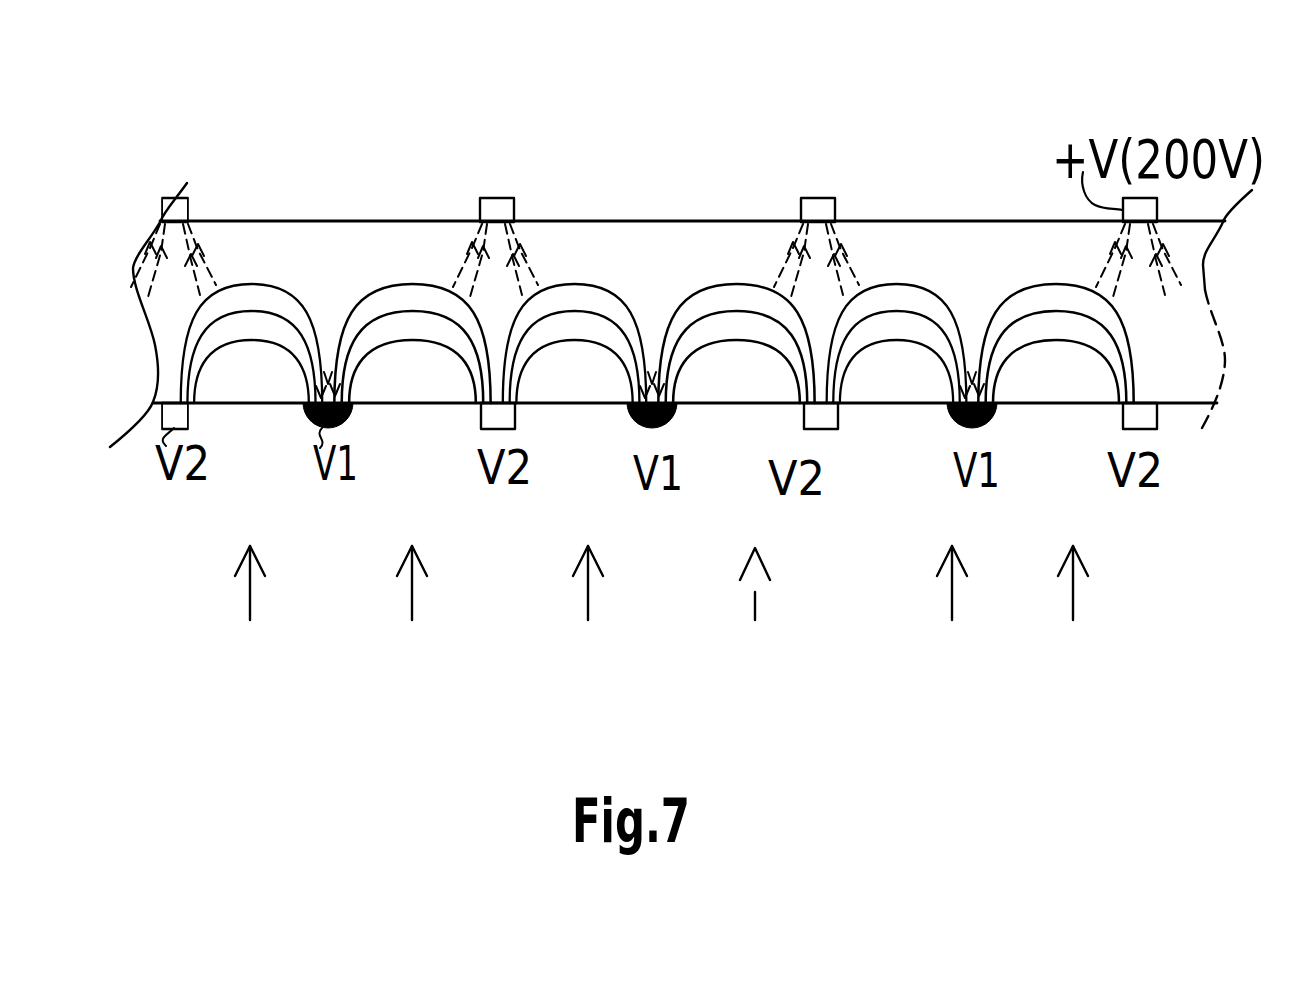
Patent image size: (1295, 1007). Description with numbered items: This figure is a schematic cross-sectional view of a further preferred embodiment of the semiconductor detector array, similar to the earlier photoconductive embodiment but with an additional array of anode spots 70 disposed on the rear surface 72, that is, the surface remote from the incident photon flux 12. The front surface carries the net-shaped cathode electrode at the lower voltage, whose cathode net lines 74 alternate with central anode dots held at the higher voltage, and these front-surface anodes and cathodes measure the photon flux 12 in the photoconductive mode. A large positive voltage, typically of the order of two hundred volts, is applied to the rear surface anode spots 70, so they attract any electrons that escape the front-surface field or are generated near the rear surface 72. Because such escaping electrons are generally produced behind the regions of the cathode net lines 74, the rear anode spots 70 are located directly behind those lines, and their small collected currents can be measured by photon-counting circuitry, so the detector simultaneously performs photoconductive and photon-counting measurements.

The photon flux 12 is at (658, 608).
The rear surface anode spots 70 is at (835, 198).
The rear surface 72 is at (970, 221).
The cathode net lines 74 is at (838, 430).